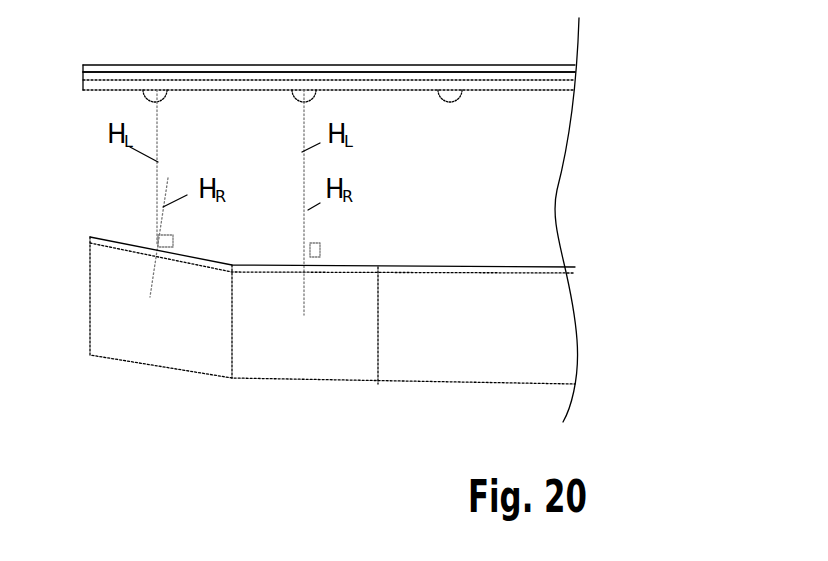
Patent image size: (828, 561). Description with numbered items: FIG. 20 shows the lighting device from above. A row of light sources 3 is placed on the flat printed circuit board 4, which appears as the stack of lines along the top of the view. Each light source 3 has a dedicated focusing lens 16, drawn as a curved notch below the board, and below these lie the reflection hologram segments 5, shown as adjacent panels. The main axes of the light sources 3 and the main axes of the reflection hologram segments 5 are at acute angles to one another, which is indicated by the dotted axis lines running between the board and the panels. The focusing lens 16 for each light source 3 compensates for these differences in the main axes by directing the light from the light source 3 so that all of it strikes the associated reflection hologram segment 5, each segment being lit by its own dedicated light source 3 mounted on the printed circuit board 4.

The light source 3 is at (153, 75).
The flat printed circuit board 4 is at (267, 72).
The focusing lens 16 is at (167, 97).
The reflection hologram segment 5 is at (152, 357).